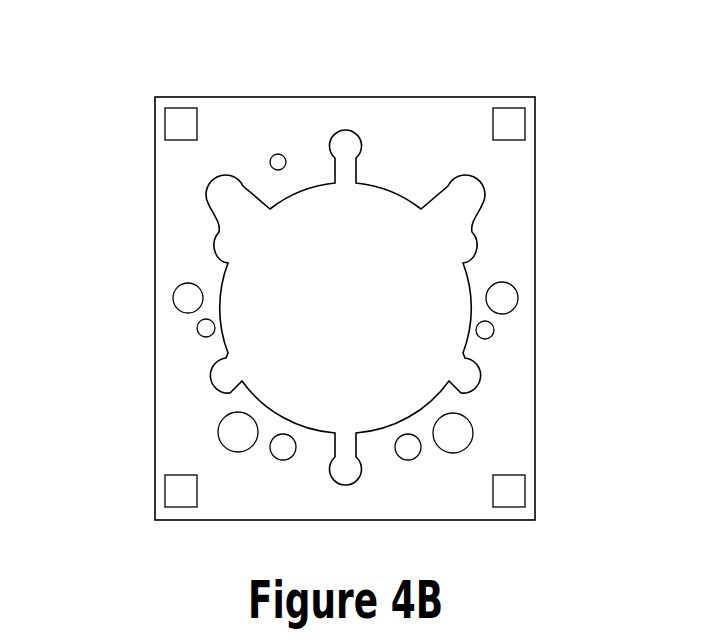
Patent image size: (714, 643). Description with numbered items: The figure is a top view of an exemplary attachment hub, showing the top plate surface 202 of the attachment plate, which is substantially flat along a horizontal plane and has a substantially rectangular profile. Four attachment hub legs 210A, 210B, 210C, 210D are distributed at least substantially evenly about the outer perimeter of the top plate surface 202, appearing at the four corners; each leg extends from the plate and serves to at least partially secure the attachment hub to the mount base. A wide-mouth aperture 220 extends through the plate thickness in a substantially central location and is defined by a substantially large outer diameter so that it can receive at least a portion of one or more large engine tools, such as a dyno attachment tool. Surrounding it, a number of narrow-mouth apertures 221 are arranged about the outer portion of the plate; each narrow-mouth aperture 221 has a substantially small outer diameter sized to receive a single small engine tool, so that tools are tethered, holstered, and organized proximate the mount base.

The top plate surface 202 is at (383, 110).
The attachment hub leg 210A is at (146, 491).
The attachment hub leg 210B is at (148, 116).
The attachment hub leg 210C is at (546, 114).
The attachment hub leg 210D is at (547, 482).
The wide-mouth aperture 220 is at (363, 318).
The narrow-mouth aperture 221 is at (452, 538).